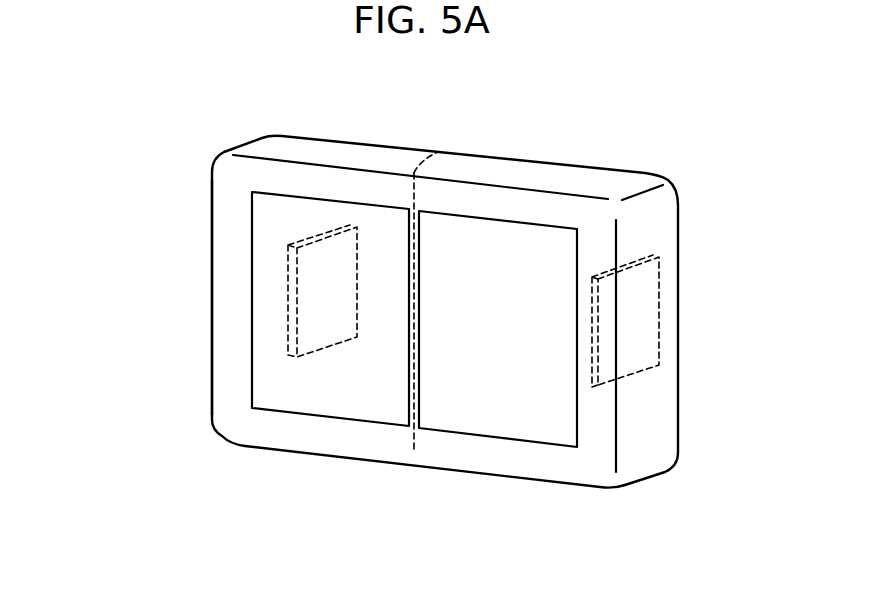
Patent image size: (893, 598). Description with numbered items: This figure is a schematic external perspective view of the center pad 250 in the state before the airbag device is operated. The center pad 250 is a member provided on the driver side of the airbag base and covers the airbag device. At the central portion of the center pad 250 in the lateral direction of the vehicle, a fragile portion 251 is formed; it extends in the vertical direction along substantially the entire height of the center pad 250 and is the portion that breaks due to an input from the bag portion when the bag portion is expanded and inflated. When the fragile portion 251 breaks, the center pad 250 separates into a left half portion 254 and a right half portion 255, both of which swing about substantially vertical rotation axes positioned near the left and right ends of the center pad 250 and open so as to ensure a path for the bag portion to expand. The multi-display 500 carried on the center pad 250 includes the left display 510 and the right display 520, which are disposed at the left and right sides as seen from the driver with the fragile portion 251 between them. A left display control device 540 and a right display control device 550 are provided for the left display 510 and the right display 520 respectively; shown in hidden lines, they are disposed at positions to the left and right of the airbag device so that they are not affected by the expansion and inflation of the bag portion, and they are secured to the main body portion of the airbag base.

The center pad 250 is at (185, 160).
The fragile portion 251 is at (413, 436).
The left half portion 254 is at (225, 323).
The right half portion 255 is at (663, 395).
The multi-display 500 is at (563, 207).
The left display 510 is at (375, 220).
The right display 520 is at (492, 242).
The left display control device 540 is at (292, 270).
The right display control device 550 is at (643, 298).